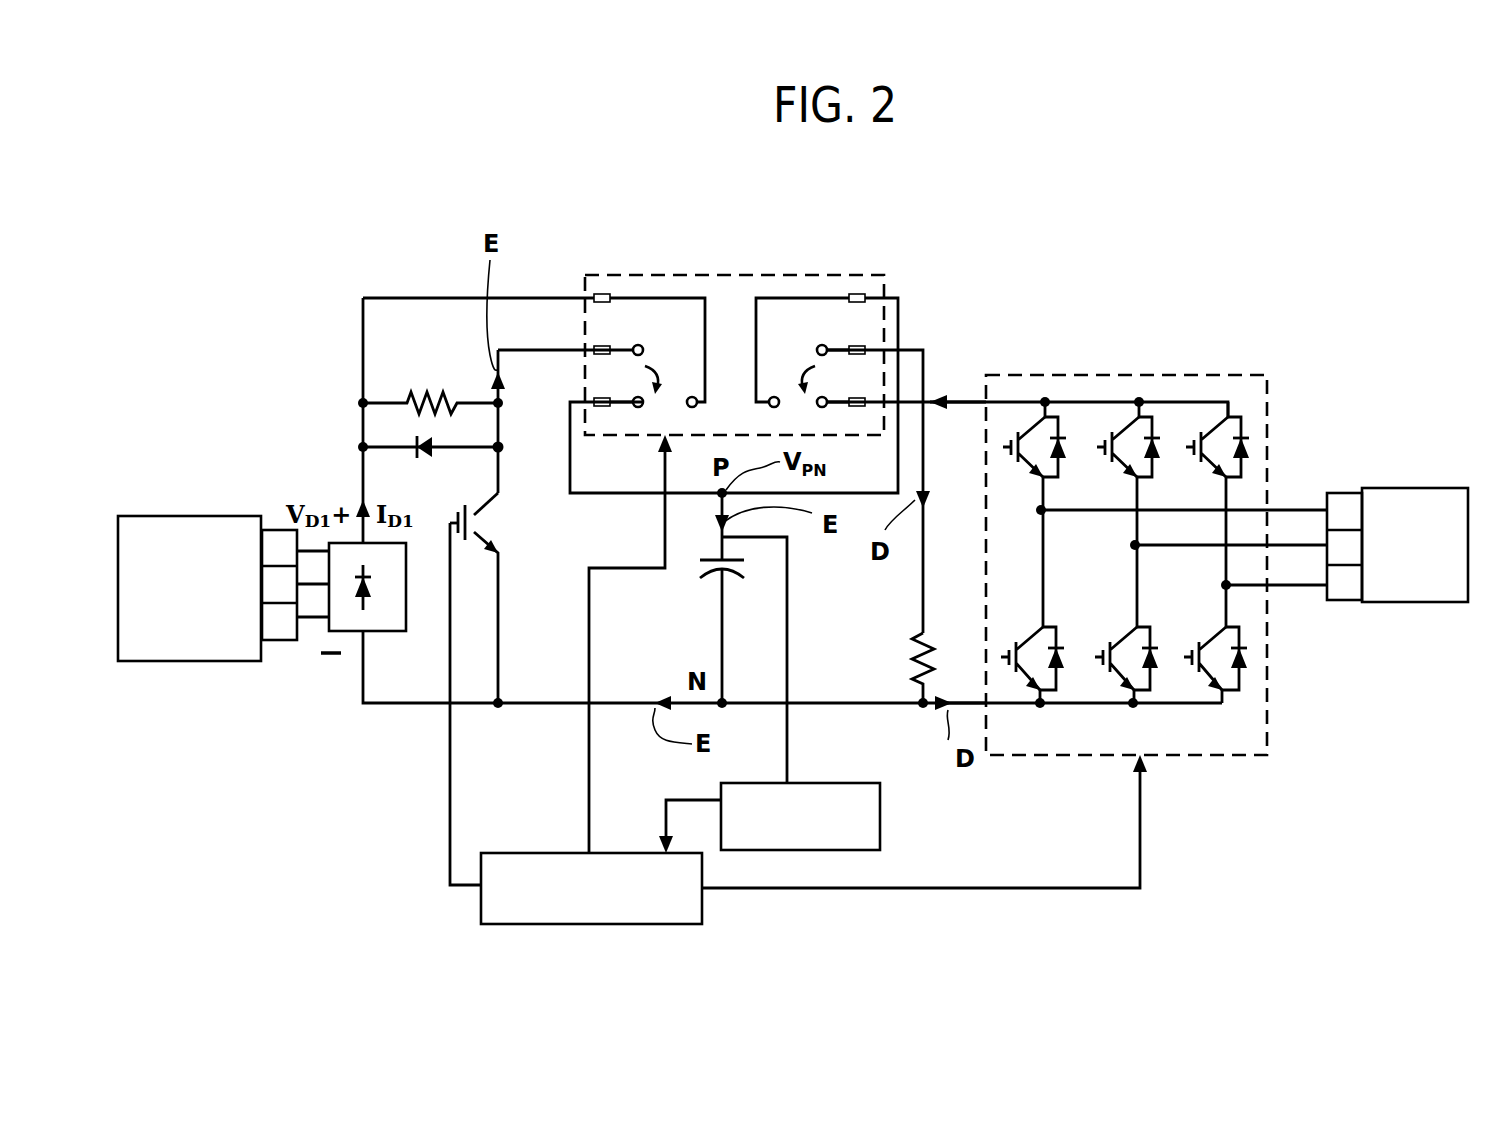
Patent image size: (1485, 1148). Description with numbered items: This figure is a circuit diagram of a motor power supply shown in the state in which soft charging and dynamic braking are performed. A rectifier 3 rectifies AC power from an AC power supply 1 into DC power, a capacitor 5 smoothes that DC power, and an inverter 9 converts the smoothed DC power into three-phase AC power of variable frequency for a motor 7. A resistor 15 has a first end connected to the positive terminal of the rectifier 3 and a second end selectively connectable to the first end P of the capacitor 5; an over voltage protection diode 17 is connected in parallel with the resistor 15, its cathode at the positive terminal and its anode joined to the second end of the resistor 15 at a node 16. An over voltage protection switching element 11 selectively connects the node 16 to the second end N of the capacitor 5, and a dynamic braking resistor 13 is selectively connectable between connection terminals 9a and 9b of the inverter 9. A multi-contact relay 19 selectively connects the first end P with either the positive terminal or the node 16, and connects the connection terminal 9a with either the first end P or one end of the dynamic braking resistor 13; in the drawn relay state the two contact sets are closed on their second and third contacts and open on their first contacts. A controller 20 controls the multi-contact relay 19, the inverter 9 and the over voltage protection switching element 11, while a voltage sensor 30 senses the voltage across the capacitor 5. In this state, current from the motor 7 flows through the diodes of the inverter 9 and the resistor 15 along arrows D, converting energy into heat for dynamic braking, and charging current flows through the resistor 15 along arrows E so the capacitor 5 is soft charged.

The AC power supply 1 is at (170, 516).
The rectifier 3 is at (393, 632).
The capacitor 5 is at (722, 580).
The motor 7 is at (1428, 488).
The inverter 9 is at (1145, 375).
The connection terminal 9a is at (963, 402).
The connection terminal 9b is at (972, 708).
The over voltage protection switching element 11 is at (495, 500).
The dynamic braking resistor 13 is at (915, 640).
The resistor 15 is at (426, 400).
The node 16 is at (500, 447).
The over voltage protection diode 17 is at (415, 430).
The multi-contact relay 19 is at (810, 272).
The controller 20 is at (481, 910).
The voltage sensor 30 is at (880, 810).